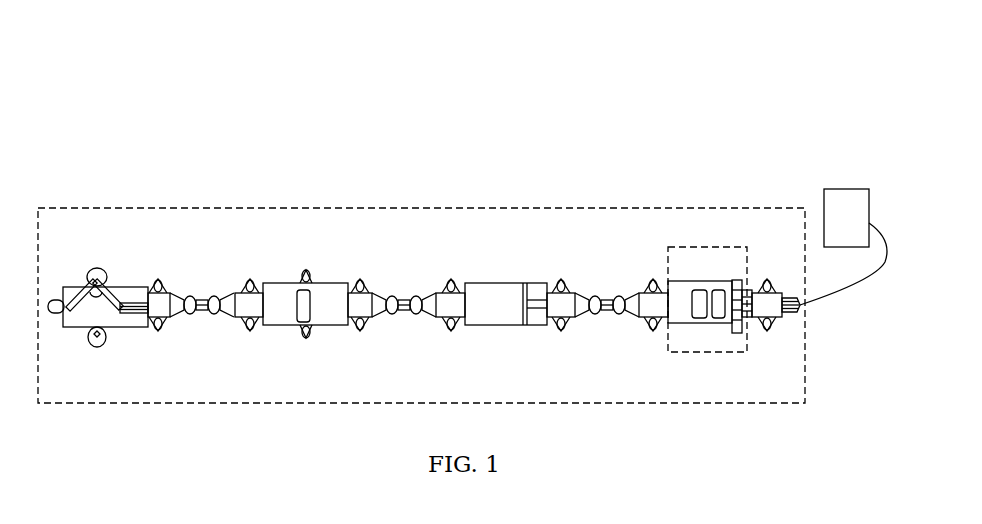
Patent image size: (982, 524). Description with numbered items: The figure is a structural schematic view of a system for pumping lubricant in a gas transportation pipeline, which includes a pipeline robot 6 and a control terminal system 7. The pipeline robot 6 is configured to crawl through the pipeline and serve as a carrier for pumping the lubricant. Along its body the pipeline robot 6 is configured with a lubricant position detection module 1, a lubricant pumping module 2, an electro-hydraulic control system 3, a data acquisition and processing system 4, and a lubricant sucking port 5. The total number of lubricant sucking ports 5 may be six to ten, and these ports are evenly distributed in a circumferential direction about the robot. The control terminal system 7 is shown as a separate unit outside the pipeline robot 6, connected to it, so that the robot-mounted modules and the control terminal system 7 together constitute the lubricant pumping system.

The lubricant position detection module 1 is at (298, 297).
The lubricant pumping module 2 is at (674, 177).
The electro-hydraulic control system 3 is at (697, 283).
The data acquisition and processing system 4 is at (712, 283).
The lubricant sucking port 5 is at (733, 282).
The pipeline robot 6 is at (793, 208).
The control terminal system 7 is at (843, 210).